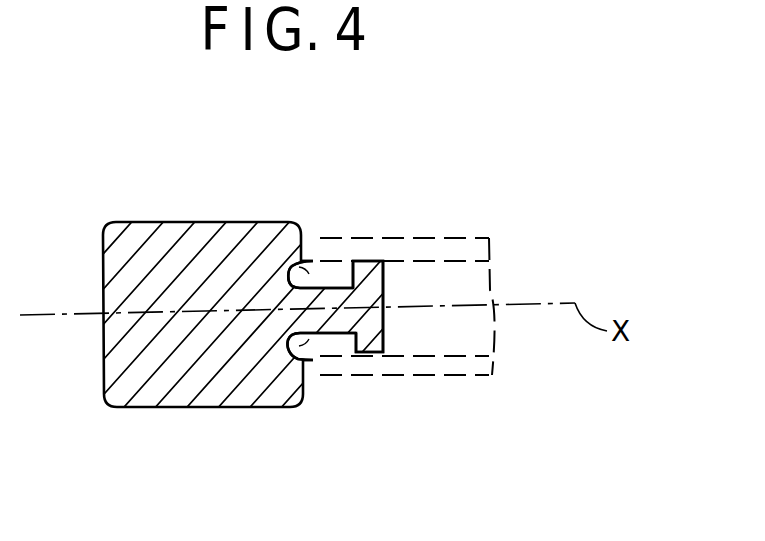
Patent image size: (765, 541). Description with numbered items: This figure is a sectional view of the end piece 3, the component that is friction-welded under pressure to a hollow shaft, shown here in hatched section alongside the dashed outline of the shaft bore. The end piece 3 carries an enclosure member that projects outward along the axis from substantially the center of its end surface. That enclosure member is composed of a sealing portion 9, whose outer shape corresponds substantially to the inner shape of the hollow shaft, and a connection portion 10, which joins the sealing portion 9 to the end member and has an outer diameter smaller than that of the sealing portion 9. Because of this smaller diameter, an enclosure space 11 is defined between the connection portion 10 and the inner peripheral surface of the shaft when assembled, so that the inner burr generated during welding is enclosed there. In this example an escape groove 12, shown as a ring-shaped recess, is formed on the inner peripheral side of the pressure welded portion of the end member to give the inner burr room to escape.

The end piece 3 is at (212, 425).
The sealing portion 9 is at (381, 350).
The connection portion 10 is at (339, 323).
The enclosure space 11 is at (337, 278).
The escape groove 12 is at (312, 255).